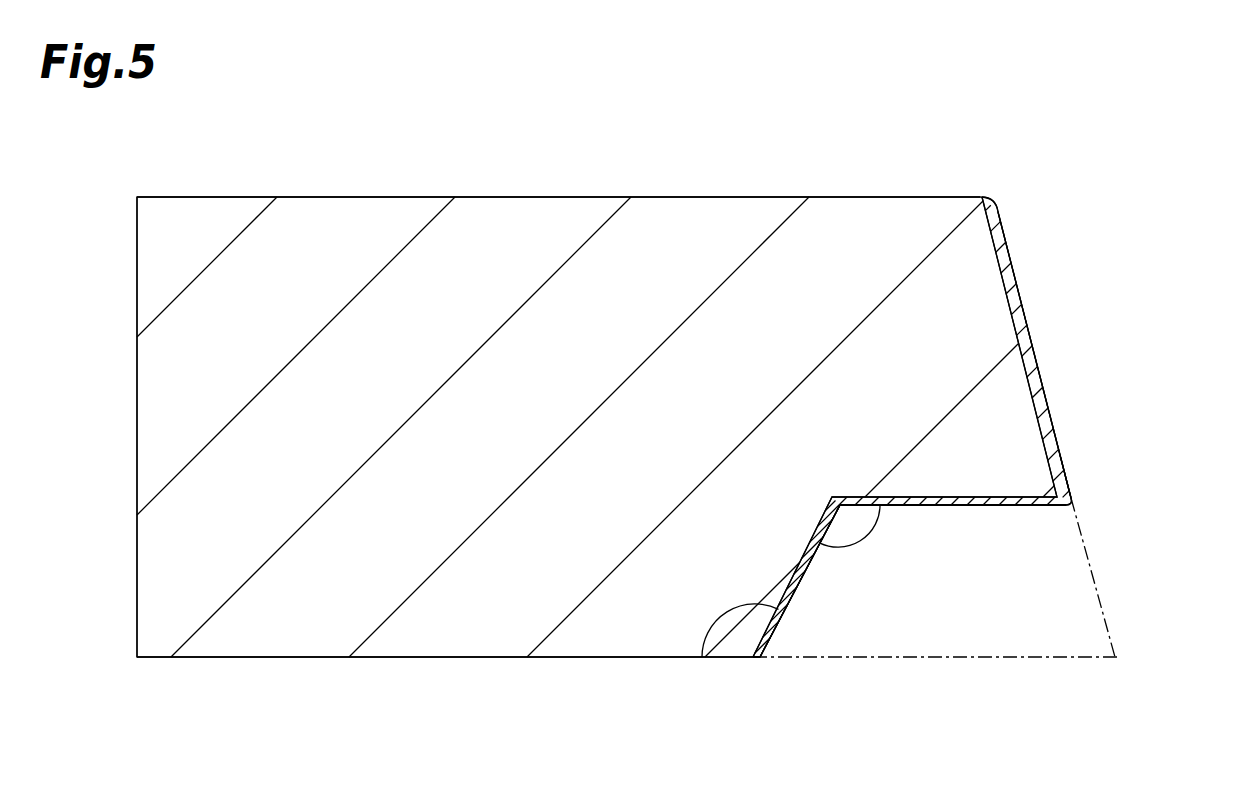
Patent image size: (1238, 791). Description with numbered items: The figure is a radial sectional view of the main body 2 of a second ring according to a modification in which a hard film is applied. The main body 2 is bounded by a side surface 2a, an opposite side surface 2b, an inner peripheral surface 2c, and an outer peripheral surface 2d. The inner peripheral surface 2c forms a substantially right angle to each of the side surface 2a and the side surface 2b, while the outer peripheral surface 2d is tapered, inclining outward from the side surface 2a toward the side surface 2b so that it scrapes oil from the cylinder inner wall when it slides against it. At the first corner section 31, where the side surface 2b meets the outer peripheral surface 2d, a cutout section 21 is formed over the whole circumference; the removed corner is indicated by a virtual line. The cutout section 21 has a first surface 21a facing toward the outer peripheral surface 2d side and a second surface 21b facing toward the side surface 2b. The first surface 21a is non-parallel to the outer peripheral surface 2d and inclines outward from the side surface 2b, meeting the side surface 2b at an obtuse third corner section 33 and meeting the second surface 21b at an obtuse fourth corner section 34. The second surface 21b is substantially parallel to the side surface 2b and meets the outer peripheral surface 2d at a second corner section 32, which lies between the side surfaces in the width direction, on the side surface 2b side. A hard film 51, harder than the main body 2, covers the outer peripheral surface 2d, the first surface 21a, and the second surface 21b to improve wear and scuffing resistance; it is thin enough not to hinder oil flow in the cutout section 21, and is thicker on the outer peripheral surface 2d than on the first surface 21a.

The main body 2 is at (360, 225).
The side surface 2a is at (590, 197).
The side surface 2b is at (455, 658).
The inner peripheral surface 2c is at (137, 408).
The outer peripheral surface 2d is at (1037, 357).
The cutout section 21 is at (952, 605).
The first surface 21a is at (794, 592).
The second surface 21b is at (1000, 505).
The first corner section 31 is at (1117, 656).
The second corner section 32 is at (1069, 481).
The third corner section 33 is at (755, 659).
The fourth corner section 34 is at (840, 507).
The hard film 51 is at (1018, 288).